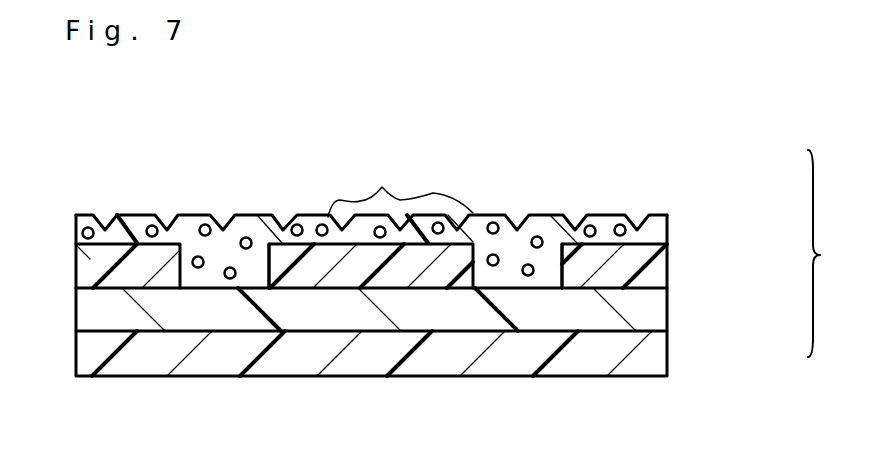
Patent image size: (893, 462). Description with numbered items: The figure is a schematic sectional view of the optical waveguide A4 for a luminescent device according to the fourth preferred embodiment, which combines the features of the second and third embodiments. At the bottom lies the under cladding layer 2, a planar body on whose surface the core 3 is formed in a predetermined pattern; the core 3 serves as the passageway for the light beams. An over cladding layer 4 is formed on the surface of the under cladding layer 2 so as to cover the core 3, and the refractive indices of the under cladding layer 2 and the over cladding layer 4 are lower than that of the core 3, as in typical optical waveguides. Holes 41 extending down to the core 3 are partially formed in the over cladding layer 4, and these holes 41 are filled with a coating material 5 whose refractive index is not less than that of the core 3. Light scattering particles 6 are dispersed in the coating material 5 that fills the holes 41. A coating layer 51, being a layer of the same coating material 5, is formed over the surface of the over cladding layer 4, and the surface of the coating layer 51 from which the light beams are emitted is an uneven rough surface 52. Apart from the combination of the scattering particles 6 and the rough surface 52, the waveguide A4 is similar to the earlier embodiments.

The under cladding layer 2 is at (652, 343).
The core 3 is at (652, 313).
The over cladding layer 4 is at (652, 270).
The holes 41 is at (267, 260).
The coating material 5 is at (215, 262).
The coating layer 51 is at (652, 226).
The uneven rough surface 52 is at (170, 218).
The light scattering particles 6 is at (400, 184).
The optical waveguide for a luminescent device A4 is at (835, 253).